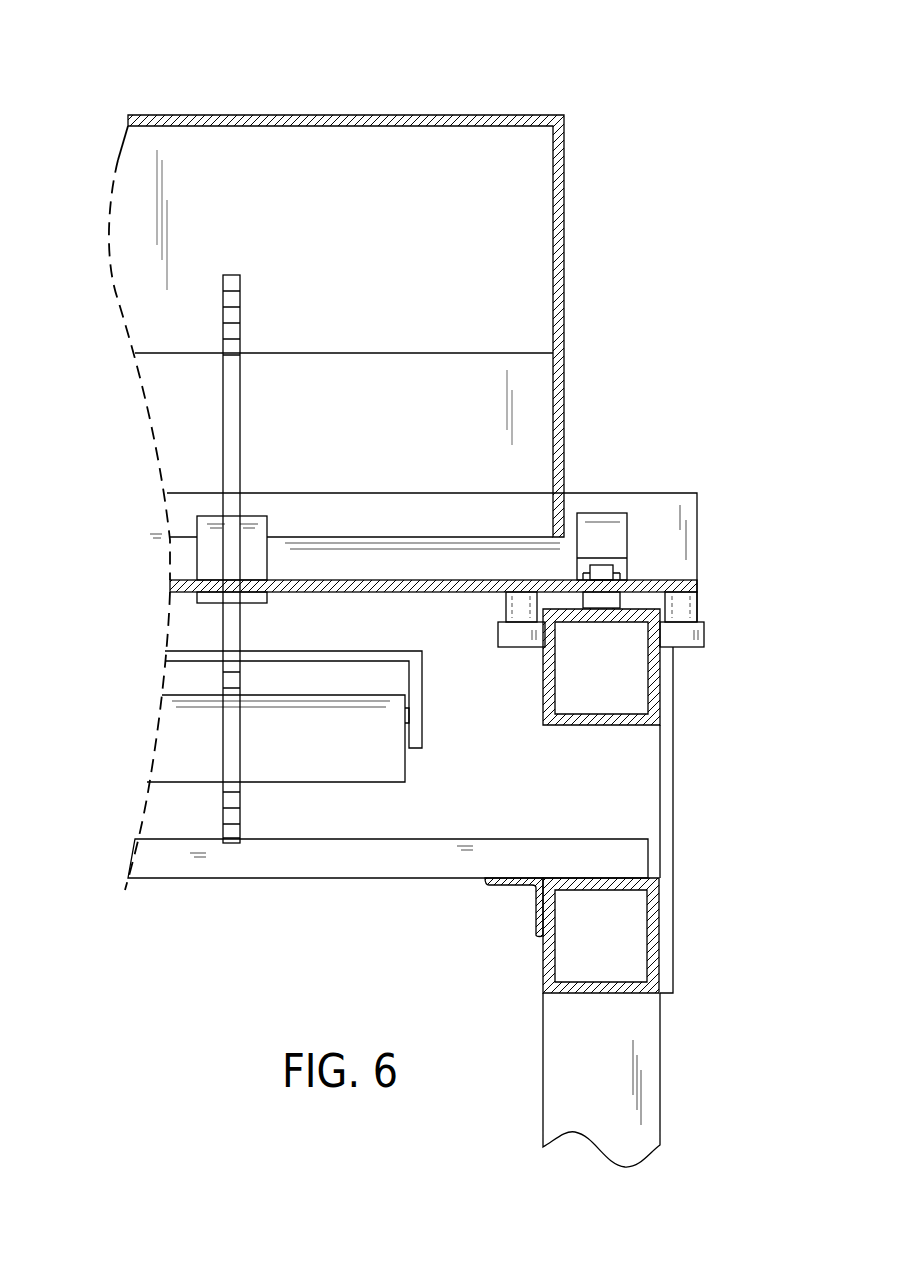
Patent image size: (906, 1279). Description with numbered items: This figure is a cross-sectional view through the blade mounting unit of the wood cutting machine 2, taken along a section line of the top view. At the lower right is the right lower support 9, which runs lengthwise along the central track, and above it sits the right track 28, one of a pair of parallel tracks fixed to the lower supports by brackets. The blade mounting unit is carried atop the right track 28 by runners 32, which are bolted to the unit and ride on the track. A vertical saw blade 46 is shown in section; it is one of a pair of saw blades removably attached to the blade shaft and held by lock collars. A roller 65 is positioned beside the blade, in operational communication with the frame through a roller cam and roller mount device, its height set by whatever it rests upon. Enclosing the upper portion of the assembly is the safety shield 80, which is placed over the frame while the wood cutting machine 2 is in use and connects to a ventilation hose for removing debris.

The wood cutting machine 2 is at (648, 115).
The right lower support 9 is at (652, 946).
The right track 28 is at (653, 686).
The runners 32 is at (604, 601).
The saw blade 46 is at (225, 302).
The roller 65 is at (167, 737).
The safety shield 80 is at (361, 115).